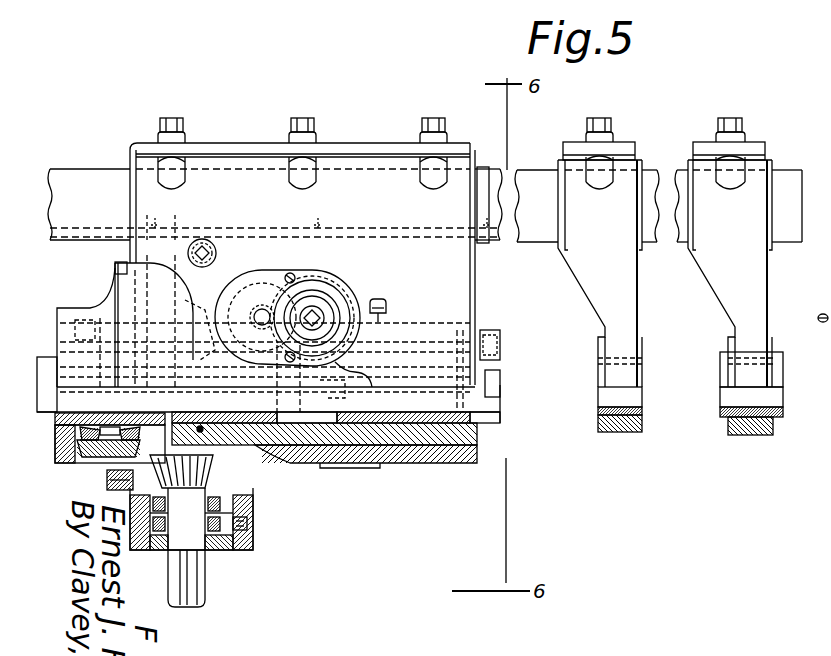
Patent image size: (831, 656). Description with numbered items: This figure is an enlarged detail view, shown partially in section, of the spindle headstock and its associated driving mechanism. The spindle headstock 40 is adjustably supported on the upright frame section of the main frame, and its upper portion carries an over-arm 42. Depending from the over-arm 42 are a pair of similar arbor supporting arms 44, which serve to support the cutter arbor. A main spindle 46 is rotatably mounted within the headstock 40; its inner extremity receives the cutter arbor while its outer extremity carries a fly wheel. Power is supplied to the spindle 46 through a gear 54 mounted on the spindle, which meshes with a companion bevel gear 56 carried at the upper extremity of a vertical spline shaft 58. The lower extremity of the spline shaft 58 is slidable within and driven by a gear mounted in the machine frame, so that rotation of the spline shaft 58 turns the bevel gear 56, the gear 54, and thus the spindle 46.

The spindle headstock 40 is at (125, 157).
The over-arm 42 is at (790, 180).
The arbor supporting arms 44 is at (733, 302).
The main spindle 46 is at (432, 405).
The gear 54 is at (153, 462).
The bevel gear 56 is at (213, 478).
The vertical spline shaft 58 is at (200, 568).